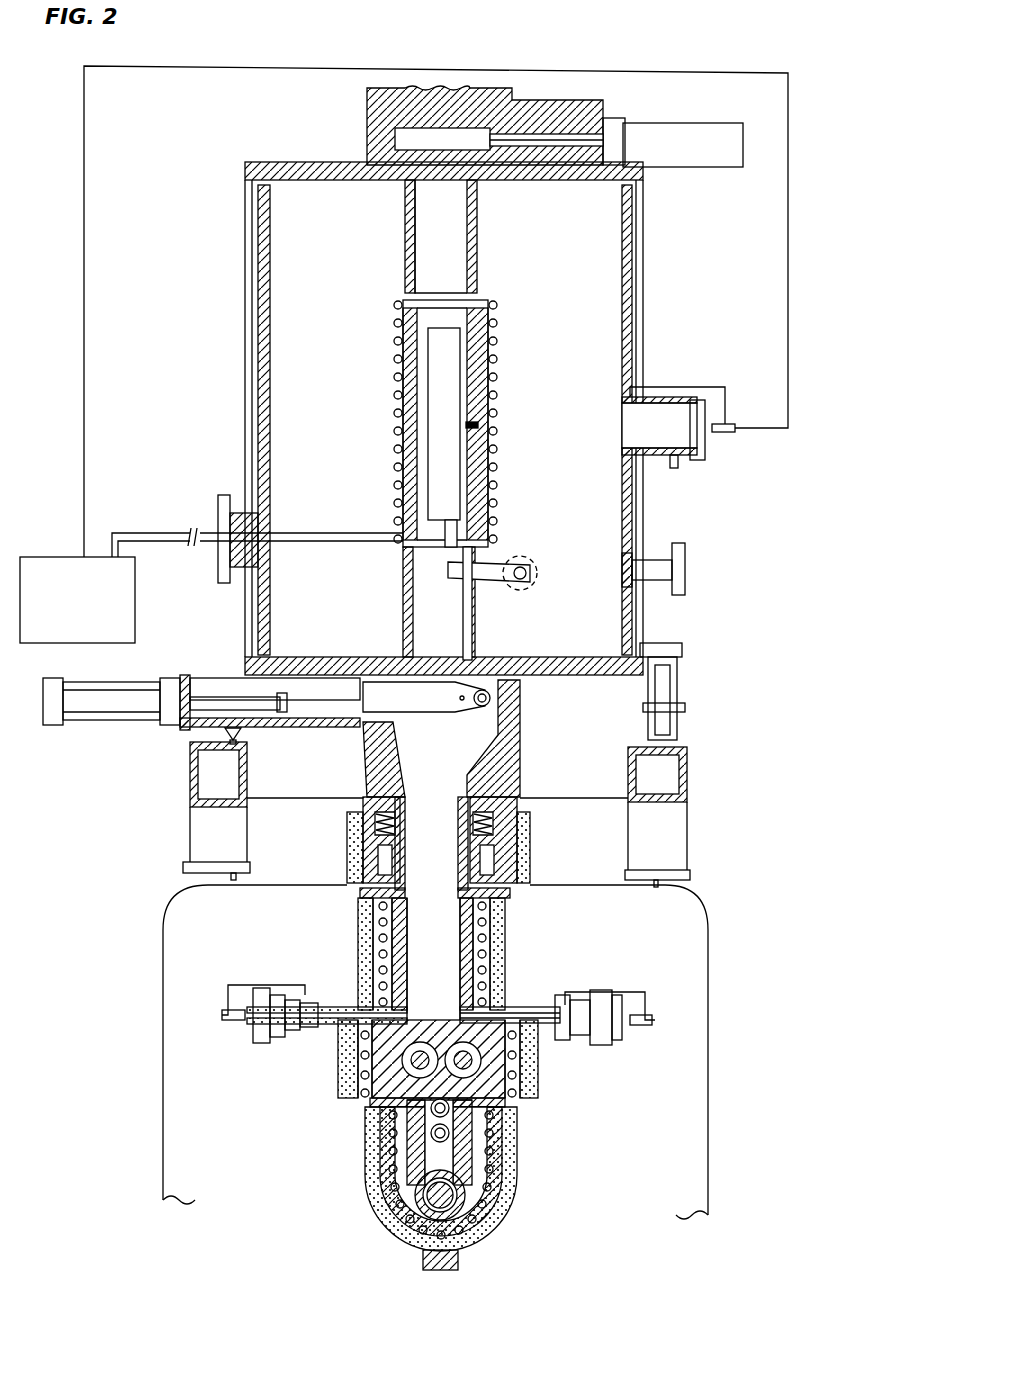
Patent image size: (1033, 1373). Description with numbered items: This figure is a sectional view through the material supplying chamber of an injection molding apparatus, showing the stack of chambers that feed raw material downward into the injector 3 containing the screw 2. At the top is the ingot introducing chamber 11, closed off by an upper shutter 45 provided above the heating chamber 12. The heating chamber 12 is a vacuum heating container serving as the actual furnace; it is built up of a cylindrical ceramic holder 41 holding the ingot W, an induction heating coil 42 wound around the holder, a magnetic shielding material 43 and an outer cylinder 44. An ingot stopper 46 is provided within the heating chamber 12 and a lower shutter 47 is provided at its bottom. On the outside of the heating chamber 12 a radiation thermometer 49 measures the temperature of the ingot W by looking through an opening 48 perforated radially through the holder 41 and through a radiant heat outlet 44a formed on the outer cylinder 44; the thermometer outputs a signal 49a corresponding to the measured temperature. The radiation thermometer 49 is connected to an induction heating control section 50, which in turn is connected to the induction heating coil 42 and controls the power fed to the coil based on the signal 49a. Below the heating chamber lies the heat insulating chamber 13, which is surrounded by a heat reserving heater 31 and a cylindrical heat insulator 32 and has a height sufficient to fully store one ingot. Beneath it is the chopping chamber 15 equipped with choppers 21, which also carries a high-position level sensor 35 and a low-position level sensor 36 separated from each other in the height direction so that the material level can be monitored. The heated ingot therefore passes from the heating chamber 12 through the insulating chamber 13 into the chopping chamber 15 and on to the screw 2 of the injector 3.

The screw 2 is at (447, 1206).
The injector 3 is at (360, 1253).
The ingot introducing chamber 11 is at (470, 104).
The heating chamber 12 is at (232, 315).
The heat insulating chamber 13 is at (349, 928).
The chopping chamber 15 is at (430, 1165).
The choppers 21 is at (415, 1060).
The heat reserving heater 31 is at (505, 910).
The cylindrical heat insulator 32 is at (505, 959).
The high-position level sensor 35 is at (435, 1108).
The low-position level sensor 36 is at (447, 1136).
The cylindrical ceramic holder 41 is at (484, 300).
The induction heating coil 42 is at (498, 337).
The magnetic shielding material 43 is at (272, 281).
The outer cylinder 44 is at (245, 394).
The radiant heat outlet 44a is at (655, 410).
The upper shutter 45 is at (413, 130).
The ingot stopper 46 is at (504, 562).
The lower shutter 47 is at (438, 660).
The opening 48 is at (478, 425).
The radiation thermometer 49 is at (720, 433).
The signal 49a is at (788, 207).
The induction heating control section 50 is at (136, 590).
The ingot W is at (447, 402).